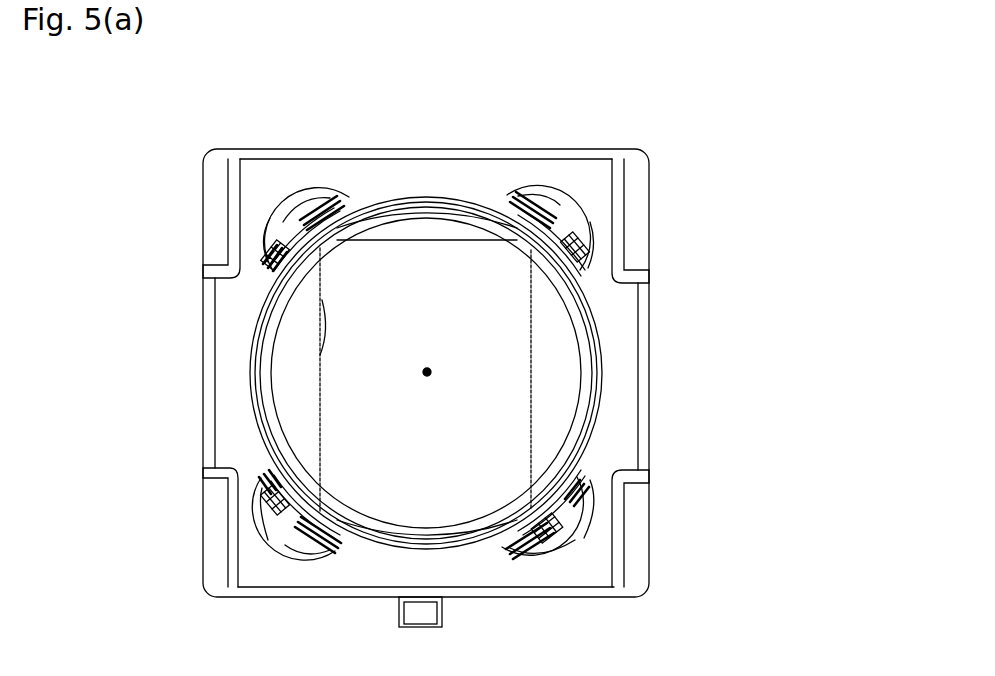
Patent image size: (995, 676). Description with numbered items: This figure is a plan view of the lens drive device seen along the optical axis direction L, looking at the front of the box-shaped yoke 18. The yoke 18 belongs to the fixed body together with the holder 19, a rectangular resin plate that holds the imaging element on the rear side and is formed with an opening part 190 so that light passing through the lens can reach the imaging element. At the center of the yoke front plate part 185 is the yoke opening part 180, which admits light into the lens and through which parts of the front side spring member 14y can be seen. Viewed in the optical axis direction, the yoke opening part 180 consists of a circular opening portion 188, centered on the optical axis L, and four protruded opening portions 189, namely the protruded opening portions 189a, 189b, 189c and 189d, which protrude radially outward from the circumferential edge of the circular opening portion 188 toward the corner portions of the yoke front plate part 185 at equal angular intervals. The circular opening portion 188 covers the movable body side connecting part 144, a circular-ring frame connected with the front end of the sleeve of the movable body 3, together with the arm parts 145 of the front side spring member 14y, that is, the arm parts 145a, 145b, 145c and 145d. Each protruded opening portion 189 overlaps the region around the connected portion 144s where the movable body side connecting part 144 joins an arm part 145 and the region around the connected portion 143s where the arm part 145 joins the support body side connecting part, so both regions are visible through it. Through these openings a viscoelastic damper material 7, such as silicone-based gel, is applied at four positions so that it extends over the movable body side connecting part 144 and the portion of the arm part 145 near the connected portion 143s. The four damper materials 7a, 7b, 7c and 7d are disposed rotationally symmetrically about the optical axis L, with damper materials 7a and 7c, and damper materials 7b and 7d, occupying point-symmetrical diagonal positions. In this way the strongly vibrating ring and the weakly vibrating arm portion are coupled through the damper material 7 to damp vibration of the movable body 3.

The yoke 18 is at (196, 313).
The yoke front plate part 185 is at (226, 398).
The holder 19 is at (203, 550).
The yoke opening part 180 is at (502, 66).
The circular opening portion 188 is at (407, 194).
The opening part 190 is at (260, 418).
The movable body 3 is at (337, 238).
The damper material 7 is at (427, 374).
The damper material 7d is at (338, 232).
The damper material 7a is at (590, 286).
The damper material 7b is at (552, 555).
The damper material 7c is at (268, 503).
The arm part 145 is at (421, 372).
The arm part 145a is at (582, 230).
The arm part 145b is at (318, 548).
The arm part 145c is at (263, 240).
The arm part 145d is at (628, 102).
The protruded opening portion 189 is at (428, 373).
The protruded opening portion 189a is at (580, 222).
The protruded opening portion 189b is at (540, 565).
The protruded opening portion 189c is at (318, 560).
The protruded opening portion 189d is at (322, 192).
The movable body side connecting part 144 is at (292, 266).
The connected portion 144s is at (320, 295).
The connected portion 143s is at (270, 232).
The front side spring member 14y is at (320, 354).
The lens optical axis direction L is at (427, 372).